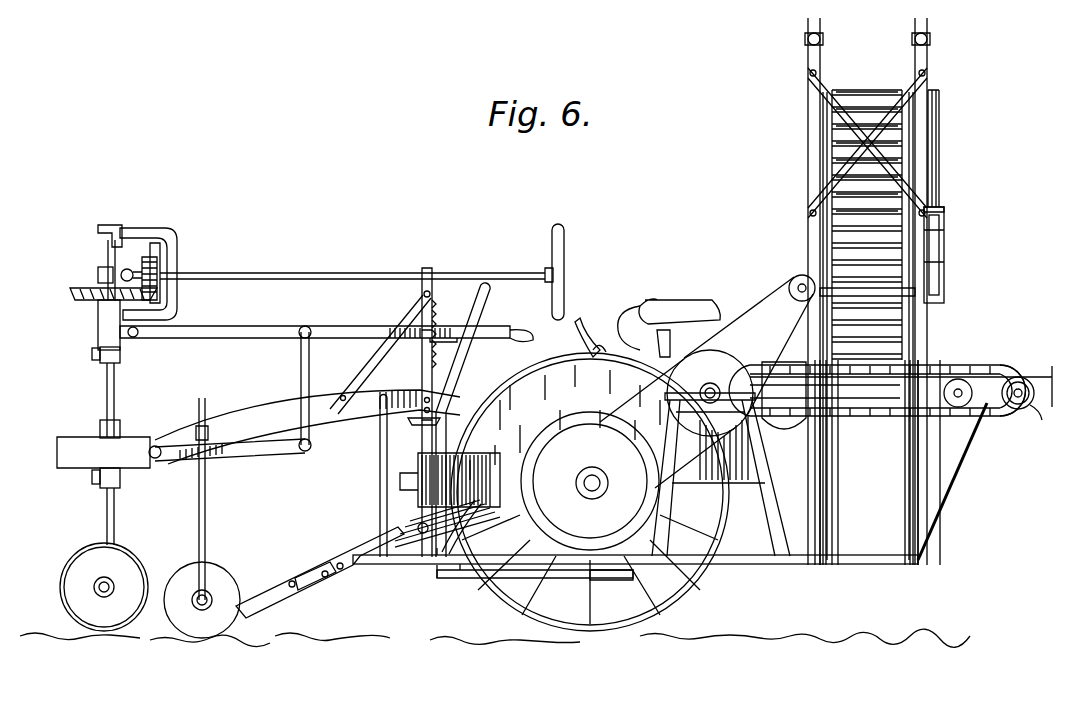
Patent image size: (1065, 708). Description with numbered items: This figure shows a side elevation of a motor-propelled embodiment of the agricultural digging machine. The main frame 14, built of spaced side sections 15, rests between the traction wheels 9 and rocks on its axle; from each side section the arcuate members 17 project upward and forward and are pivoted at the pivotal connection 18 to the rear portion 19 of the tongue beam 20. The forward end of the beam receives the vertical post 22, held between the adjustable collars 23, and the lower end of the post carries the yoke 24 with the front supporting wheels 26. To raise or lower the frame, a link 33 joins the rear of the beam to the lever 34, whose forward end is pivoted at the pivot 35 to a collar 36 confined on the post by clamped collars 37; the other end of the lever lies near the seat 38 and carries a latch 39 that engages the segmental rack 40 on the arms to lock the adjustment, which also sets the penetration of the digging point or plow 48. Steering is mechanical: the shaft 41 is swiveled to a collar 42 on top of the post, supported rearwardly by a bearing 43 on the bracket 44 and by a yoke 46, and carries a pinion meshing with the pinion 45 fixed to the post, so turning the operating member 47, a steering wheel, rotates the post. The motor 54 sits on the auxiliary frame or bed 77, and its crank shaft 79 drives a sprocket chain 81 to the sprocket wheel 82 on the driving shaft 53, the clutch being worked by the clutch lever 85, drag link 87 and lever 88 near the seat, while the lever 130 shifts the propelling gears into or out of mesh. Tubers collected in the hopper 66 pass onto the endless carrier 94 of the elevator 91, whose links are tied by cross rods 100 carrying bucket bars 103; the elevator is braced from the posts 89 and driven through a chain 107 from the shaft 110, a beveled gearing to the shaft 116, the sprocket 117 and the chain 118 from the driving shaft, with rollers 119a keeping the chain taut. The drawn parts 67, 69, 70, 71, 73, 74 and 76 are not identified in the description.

The traction wheels 9 is at (694, 582).
The main frame 14 is at (358, 546).
The side sections 15 is at (322, 560).
The arcuate members 17 is at (262, 410).
The pivotal connection 18 is at (157, 446).
The rear portion of tongue beam 19 is at (232, 454).
The tongue beam 20 is at (71, 437).
The post 22 is at (114, 393).
The collars 23 is at (121, 433).
The yoke 24 is at (114, 535).
The front supporting wheels 26 is at (136, 577).
The link 33 is at (313, 378).
The lever 34 is at (275, 328).
The pivot 35 is at (135, 338).
The collar 36 is at (98, 332).
The collars 37 is at (100, 357).
The seat 38 is at (679, 300).
The latch 39 is at (437, 348).
The segmental rack 40 is at (434, 310).
The shaft 41 is at (323, 273).
The collar 42 is at (98, 273).
The bearing 43 is at (426, 266).
The bracket and pinion 44 is at (148, 262).
The pinion 45 is at (74, 293).
The yoke 46 is at (178, 255).
The operating member 47 is at (564, 247).
The digging point or plow 48 is at (258, 625).
The supporting shaft 53 is at (625, 328).
The motor 54 is at (516, 468).
The hopper 66 is at (949, 470).
The conveyor chain 67 is at (874, 414).
The sprocket 69 is at (958, 380).
The chain end 70 is at (972, 417).
The chain hook 71 is at (1042, 422).
The end sprocket 73 is at (1023, 365).
The conveyor frame 74 is at (855, 418).
The sprocket shaft 76 is at (1017, 388).
The auxiliary frame or bed 77 is at (777, 565).
The crank shaft 79 is at (597, 492).
The sprocket chain 81 is at (624, 402).
The sprocket wheel 82 is at (715, 352).
The clutch lever 85 is at (608, 580).
The drag link 87 is at (464, 577).
The lever 88 is at (438, 550).
The posts 89 is at (912, 527).
The elevator 91 is at (837, 152).
The endless carrier 94 is at (882, 92).
The cross rods 100 is at (852, 241).
The bucket bar 103 is at (845, 207).
The chain 107 is at (939, 161).
The shaft 110 is at (875, 290).
The shaft 116 is at (800, 278).
The sprocket 117 is at (793, 302).
The chain 118 is at (768, 307).
The rollers 119a is at (945, 234).
The lever 130 is at (587, 320).